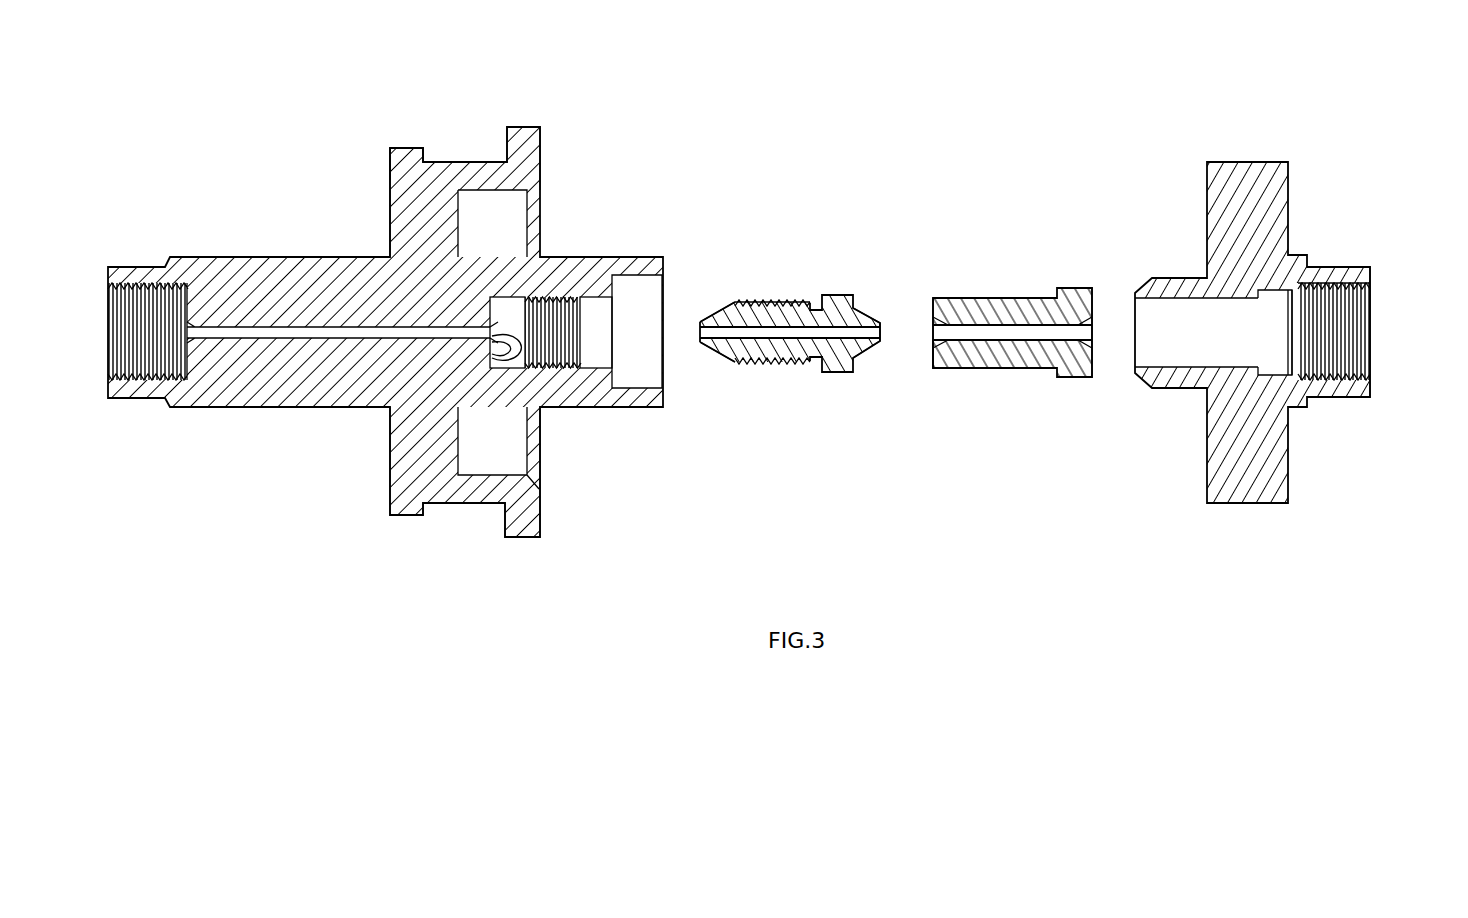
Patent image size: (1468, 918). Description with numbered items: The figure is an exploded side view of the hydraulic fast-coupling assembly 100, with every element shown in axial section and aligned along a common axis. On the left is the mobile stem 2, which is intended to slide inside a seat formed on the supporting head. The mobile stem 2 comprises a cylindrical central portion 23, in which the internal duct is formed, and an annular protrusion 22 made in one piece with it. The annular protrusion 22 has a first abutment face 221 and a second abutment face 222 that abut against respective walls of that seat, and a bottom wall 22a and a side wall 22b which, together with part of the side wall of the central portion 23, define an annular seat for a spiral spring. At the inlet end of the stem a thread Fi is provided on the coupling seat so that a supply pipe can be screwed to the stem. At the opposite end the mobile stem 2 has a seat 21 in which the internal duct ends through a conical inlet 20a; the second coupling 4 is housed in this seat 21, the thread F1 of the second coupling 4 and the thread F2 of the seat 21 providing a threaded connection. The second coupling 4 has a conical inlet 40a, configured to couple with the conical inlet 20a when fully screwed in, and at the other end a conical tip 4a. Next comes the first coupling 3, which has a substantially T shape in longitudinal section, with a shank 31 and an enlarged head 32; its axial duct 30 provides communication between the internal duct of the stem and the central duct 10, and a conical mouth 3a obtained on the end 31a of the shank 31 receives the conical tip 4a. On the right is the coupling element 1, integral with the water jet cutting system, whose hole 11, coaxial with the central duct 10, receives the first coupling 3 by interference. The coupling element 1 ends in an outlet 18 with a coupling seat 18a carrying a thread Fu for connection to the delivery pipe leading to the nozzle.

The coupling element 1 is at (1252, 387).
The central duct 10 is at (1326, 397).
The hole 11 is at (1188, 367).
The outlet 18 is at (1367, 354).
The coupling seat 18a is at (1380, 332).
The thread Fu is at (1350, 245).
The hydraulic fast-coupling assembly 100 is at (1264, 108).
The mobile stem 2 is at (385, 353).
The conical inlet 20a is at (593, 412).
The seat 21 is at (600, 382).
The thread F2 is at (609, 284).
The thread Fi is at (138, 297).
The annular protrusion 22 is at (465, 515).
The bottom wall 22a is at (386, 255).
The side wall 22b is at (393, 150).
The first abutment face 221 is at (339, 152).
The second abutment face 222 is at (584, 144).
The cylindrical central portion 23 is at (187, 405).
The first coupling 3 is at (1012, 277).
The conical mouth 3a is at (933, 316).
The axial duct 30 is at (1048, 264).
The shank 31 is at (1055, 371).
The end 31a is at (940, 390).
The enlarged head 32 is at (1082, 346).
The second coupling 4 is at (790, 353).
The conical tip 4a is at (874, 358).
The conical inlet 40a is at (713, 313).
The thread F1 is at (779, 272).